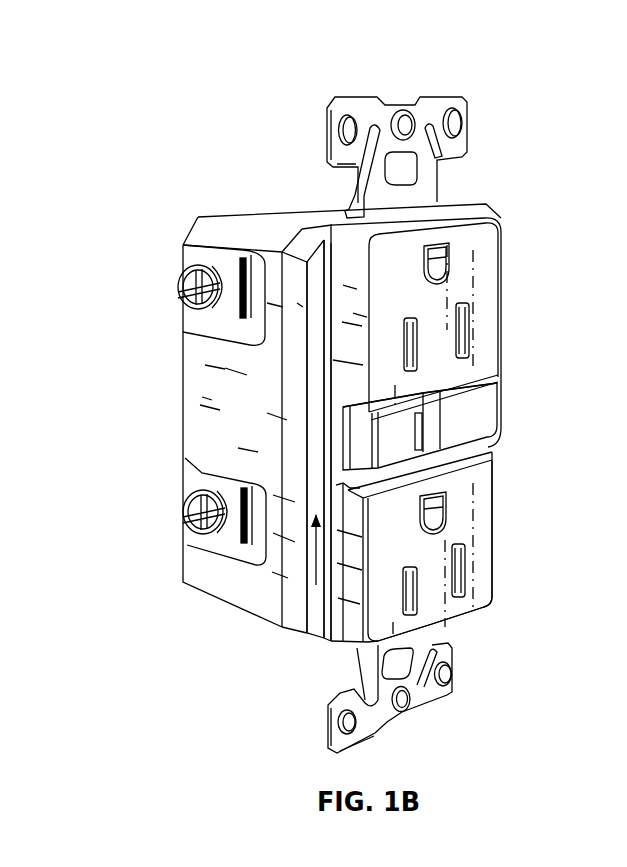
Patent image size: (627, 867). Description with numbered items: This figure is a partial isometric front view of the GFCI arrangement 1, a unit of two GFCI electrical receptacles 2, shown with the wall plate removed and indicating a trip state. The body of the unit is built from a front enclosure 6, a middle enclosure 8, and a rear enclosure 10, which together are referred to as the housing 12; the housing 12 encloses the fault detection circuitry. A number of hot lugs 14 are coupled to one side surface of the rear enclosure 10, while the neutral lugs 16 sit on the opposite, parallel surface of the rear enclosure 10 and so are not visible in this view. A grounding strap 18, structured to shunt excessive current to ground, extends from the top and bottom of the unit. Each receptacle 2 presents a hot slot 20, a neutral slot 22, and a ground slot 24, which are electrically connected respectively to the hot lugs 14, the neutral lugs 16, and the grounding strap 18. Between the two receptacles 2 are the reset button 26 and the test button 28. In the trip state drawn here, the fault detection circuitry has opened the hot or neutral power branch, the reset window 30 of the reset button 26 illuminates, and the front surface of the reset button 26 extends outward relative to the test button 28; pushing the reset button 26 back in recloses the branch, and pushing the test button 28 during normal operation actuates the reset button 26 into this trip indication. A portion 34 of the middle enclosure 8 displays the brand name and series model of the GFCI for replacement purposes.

The GFCI arrangement 1 is at (176, 164).
The GFCI electrical receptacle 2 is at (503, 347).
The front enclosure 6 is at (345, 332).
The middle enclosure 8 is at (297, 588).
The rear enclosure 10 is at (200, 352).
The housing 12 is at (303, 157).
The hot lugs 14 is at (172, 277).
The neutral lugs 16 is at (505, 263).
The grounding strap 18 is at (476, 127).
The hot slot 20 is at (408, 336).
The neutral slot 22 is at (460, 345).
The ground slot 24 is at (452, 266).
The reset button 26 is at (411, 394).
The test button 28 is at (480, 393).
The reset window 30 is at (428, 441).
The portion of the middle enclosure 34 is at (318, 590).